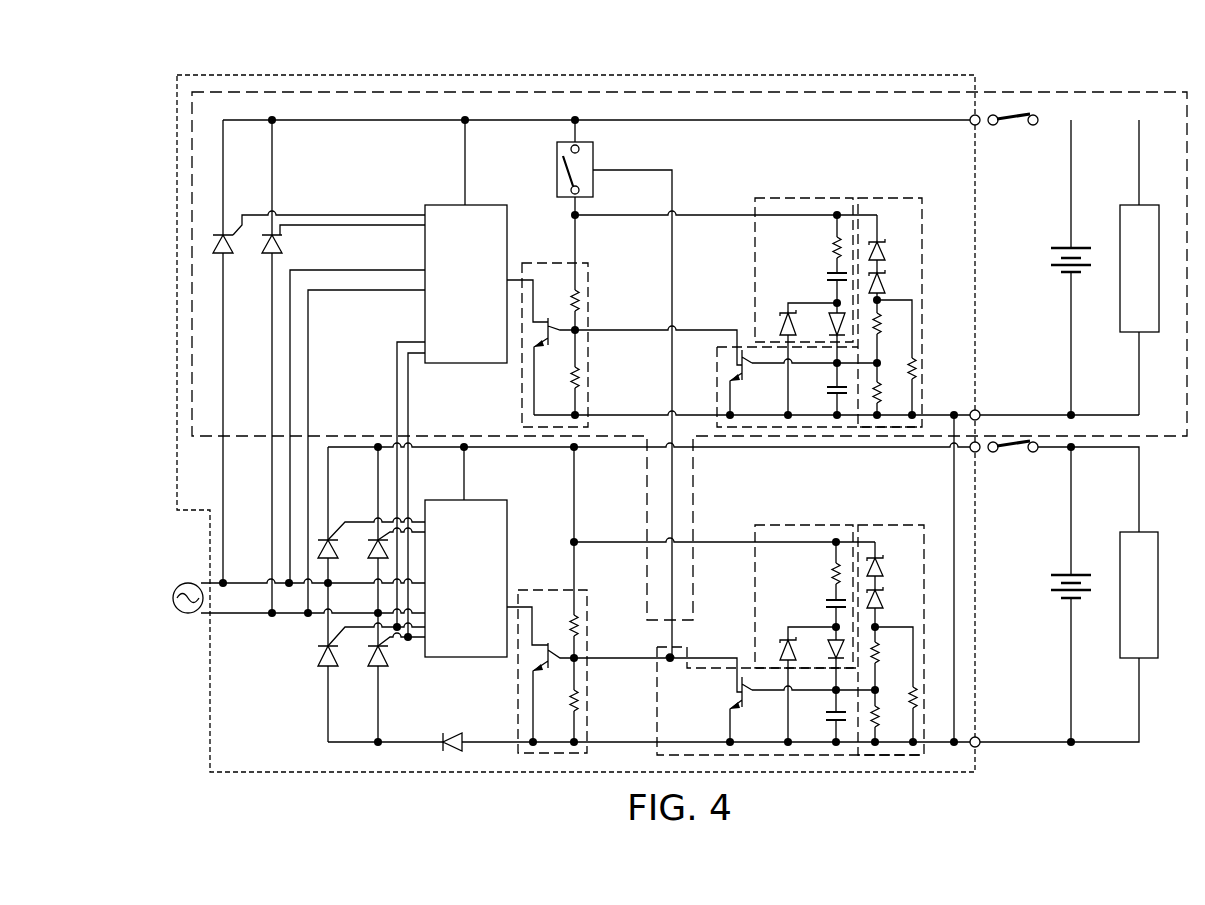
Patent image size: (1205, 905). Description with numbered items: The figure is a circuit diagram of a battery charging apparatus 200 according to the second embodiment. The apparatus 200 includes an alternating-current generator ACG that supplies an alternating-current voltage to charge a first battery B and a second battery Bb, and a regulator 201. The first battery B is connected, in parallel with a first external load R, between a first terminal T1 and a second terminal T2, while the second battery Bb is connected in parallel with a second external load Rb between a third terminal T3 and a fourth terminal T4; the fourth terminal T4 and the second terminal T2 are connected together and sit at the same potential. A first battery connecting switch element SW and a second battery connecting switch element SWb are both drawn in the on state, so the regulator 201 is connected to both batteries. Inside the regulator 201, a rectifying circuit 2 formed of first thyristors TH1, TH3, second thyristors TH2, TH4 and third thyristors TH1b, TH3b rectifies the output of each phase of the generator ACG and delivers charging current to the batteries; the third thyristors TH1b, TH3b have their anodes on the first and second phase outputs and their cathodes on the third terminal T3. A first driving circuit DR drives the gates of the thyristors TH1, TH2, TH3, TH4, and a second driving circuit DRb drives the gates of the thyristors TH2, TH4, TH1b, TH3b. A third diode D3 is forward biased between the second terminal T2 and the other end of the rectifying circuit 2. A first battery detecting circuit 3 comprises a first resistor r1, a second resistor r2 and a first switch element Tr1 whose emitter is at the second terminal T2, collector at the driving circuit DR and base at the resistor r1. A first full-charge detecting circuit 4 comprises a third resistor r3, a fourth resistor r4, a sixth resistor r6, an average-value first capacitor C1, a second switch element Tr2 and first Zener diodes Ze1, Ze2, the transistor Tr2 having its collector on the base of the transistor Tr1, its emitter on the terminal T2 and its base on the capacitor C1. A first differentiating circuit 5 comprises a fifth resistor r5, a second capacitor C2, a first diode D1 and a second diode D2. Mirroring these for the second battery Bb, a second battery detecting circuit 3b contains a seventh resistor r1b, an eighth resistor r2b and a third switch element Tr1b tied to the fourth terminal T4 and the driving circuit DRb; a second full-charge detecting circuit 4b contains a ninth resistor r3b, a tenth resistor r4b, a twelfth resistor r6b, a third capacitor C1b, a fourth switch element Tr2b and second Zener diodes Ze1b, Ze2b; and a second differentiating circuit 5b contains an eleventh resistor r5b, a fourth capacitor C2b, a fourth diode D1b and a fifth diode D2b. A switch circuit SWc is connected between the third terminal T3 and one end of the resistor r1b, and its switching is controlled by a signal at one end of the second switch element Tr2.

The battery charging apparatus 200 is at (538, 808).
The regulator 201 is at (912, 74).
The rectifying circuit 2 is at (278, 709).
The first battery detecting circuit 3 is at (588, 600).
The second battery detecting circuit 3b is at (590, 272).
The first full-charge detecting circuit 4 is at (895, 522).
The second full-charge detecting circuit 4b is at (895, 196).
The first differentiating circuit 5 is at (797, 522).
The second differentiating circuit 5b is at (800, 196).
The alternating-current generator ACG is at (187, 582).
The first thyristor TH1 is at (325, 538).
The second thyristor TH2 is at (317, 650).
The first thyristor TH3 is at (372, 540).
The second thyristor TH4 is at (372, 668).
The third thyristor TH1b is at (224, 240).
The third thyristor TH3b is at (283, 238).
The first driving circuit DR is at (507, 532).
The second driving circuit DRb is at (488, 205).
The first switch element Tr1 is at (546, 640).
The second switch element Tr2 is at (730, 680).
The third switch element Tr1b is at (547, 318).
The fourth switch element Tr2b is at (740, 352).
The first resistor r1 is at (580, 627).
The second resistor r2 is at (580, 703).
The third resistor r3 is at (880, 648).
The fourth resistor r4 is at (880, 714).
The fifth resistor r5 is at (832, 568).
The sixth resistor r6 is at (915, 695).
The seventh resistor r1b is at (584, 300).
The eighth resistor r2b is at (584, 377).
The ninth resistor r3b is at (883, 322).
The tenth resistor r4b is at (883, 397).
The eleventh resistor r5b is at (834, 245).
The twelfth resistor r6b is at (918, 367).
The first capacitor C1 is at (829, 716).
The second capacitor C2 is at (832, 600).
The third capacitor C1b is at (832, 395).
The fourth capacitor C2b is at (834, 276).
The first diode D1 is at (830, 645).
The second diode D2 is at (782, 642).
The third diode D3 is at (445, 735).
The fourth diode D1b is at (830, 330).
The fifth diode D2b is at (784, 316).
The first Zener diode Ze1 is at (883, 562).
The first Zener diode Ze2 is at (883, 596).
The second Zener diode Ze1b is at (885, 245).
The second Zener diode Ze2b is at (885, 282).
The first battery connecting switch element SW is at (1010, 452).
The second battery connecting switch element SWb is at (1015, 112).
The switch circuit SWc is at (594, 160).
The first terminal T1 is at (979, 453).
The second terminal T2 is at (979, 748).
The third terminal T3 is at (979, 124).
The fourth terminal T4 is at (979, 410).
The first battery B is at (1078, 572).
The second battery Bb is at (1078, 246).
The first external load R is at (1146, 530).
The second external load Rb is at (1148, 203).